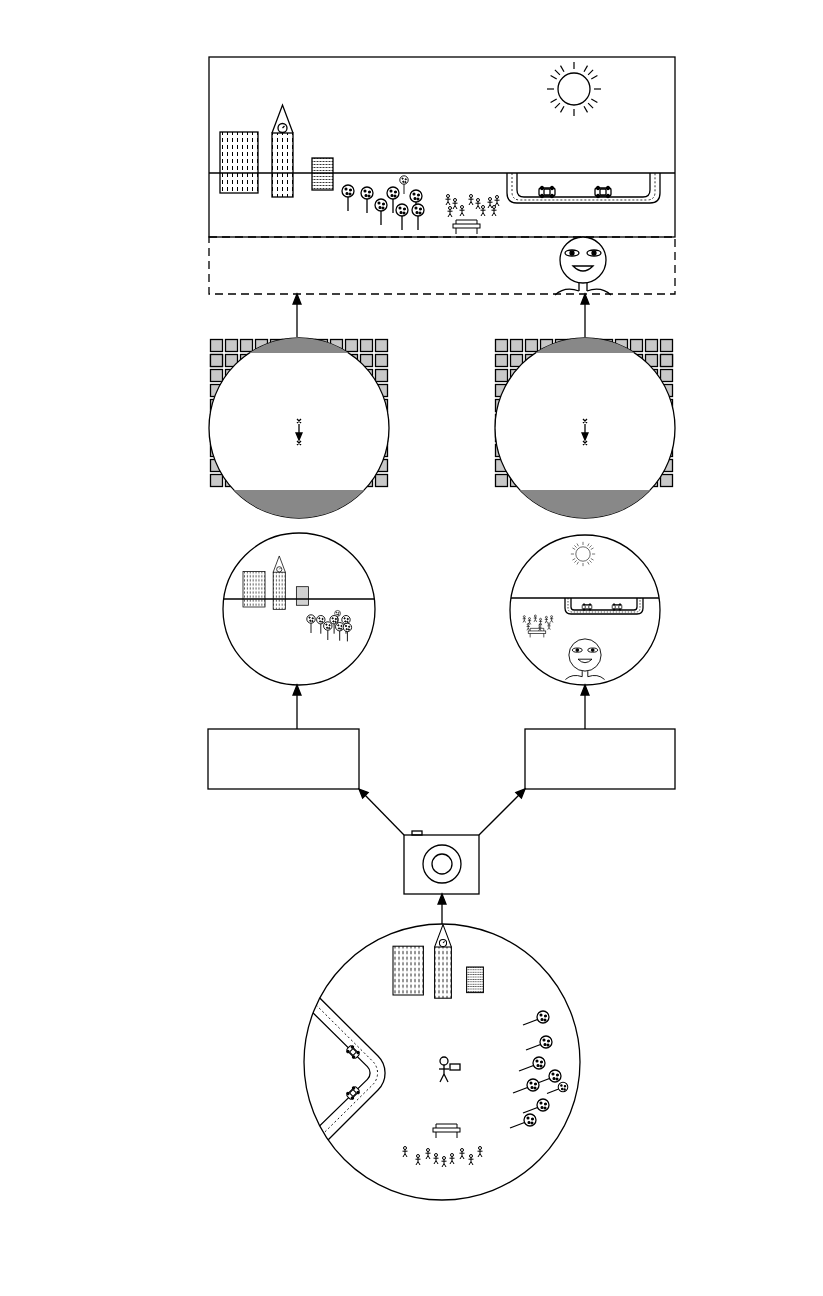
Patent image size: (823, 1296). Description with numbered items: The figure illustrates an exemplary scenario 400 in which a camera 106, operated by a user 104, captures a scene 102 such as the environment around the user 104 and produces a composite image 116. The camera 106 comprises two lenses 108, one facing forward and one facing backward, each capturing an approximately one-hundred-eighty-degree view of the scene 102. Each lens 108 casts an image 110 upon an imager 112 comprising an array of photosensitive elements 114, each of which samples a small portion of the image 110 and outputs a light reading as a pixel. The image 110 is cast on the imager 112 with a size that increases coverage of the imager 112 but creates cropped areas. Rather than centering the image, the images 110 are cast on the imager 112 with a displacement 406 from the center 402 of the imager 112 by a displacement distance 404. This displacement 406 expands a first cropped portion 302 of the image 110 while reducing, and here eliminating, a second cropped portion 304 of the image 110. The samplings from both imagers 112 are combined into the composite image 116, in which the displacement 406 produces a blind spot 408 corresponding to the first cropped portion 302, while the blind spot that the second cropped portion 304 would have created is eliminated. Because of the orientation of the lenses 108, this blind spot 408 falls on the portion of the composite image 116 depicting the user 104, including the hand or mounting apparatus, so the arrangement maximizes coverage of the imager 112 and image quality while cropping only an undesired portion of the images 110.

The exemplary scenario 400 is at (138, 48).
The scene 102 is at (352, 953).
The user 104 is at (443, 1058).
The camera 106 is at (404, 855).
The lens 108 is at (268, 729).
The image 110 is at (463, 501).
The imager 112 is at (268, 337).
The photosensitive element 114 is at (215, 360).
The composite image 116 is at (272, 57).
The first cropped portion 302 is at (257, 500).
The second cropped portion 304 is at (313, 345).
The center 402 is at (297, 420).
The displacement distance 404 is at (303, 423).
The displacement 406 is at (297, 442).
The blind spot 408 is at (217, 260).